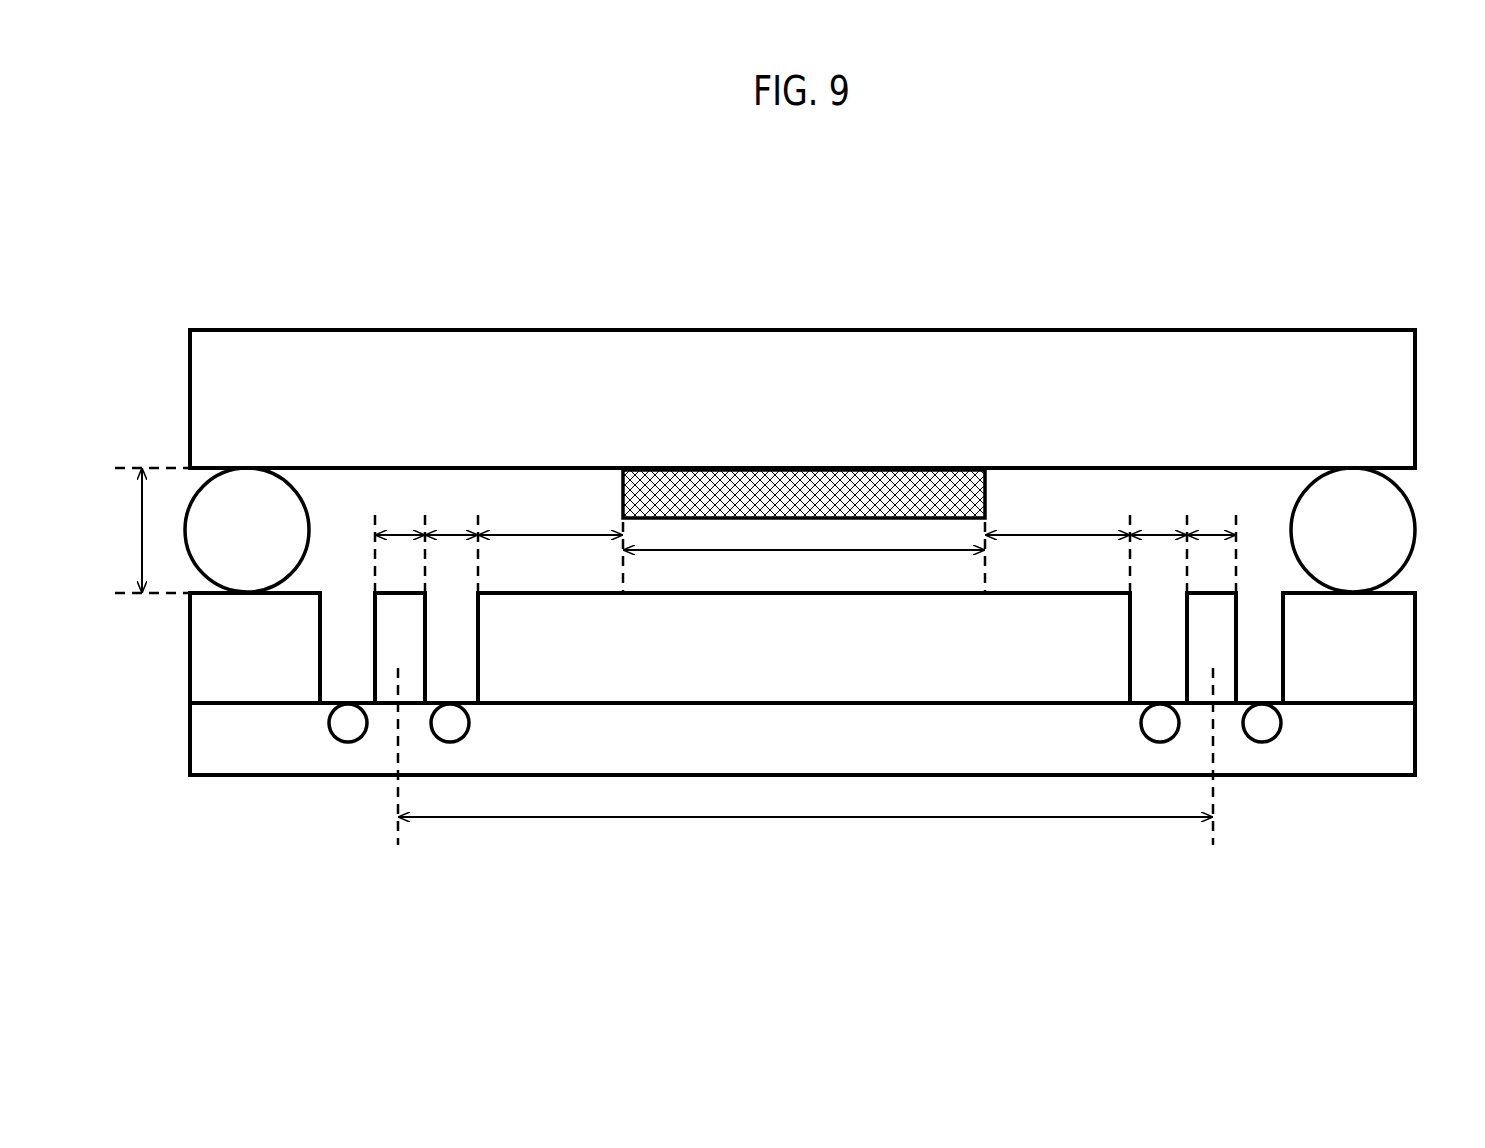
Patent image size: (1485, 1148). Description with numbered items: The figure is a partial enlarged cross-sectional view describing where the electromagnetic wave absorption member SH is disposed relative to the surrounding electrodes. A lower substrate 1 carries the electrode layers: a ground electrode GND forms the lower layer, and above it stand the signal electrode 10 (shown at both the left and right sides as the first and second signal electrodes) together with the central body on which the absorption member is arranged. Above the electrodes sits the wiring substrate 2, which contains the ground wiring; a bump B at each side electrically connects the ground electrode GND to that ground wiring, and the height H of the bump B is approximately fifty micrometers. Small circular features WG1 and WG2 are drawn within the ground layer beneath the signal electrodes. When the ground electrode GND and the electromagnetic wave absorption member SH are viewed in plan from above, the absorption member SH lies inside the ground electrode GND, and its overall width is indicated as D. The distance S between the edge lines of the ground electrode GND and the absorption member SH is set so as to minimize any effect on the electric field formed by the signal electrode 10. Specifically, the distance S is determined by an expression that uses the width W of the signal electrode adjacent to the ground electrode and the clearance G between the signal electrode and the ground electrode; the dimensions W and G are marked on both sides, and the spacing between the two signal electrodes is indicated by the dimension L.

The substrate 1 is at (1315, 748).
The wiring substrate 2 is at (1083, 380).
The signal electrode 10 is at (372, 613).
The ground electrode GND is at (800, 673).
The electromagnetic wave absorption member SH is at (808, 493).
The bump B is at (230, 518).
The first via / wiring WG1 is at (345, 727).
The second via / wiring WG2 is at (465, 735).
The height of the bump H is at (149, 530).
The width of the signal electrode W is at (805, 538).
The clearance between the signal electrode and the ground electrode G is at (806, 538).
The distance between edge lines of the ground electrode and the electromagnetic wave S is at (804, 557).
The shield width dimension D is at (804, 568).
The signal line pitch dimension L is at (805, 764).